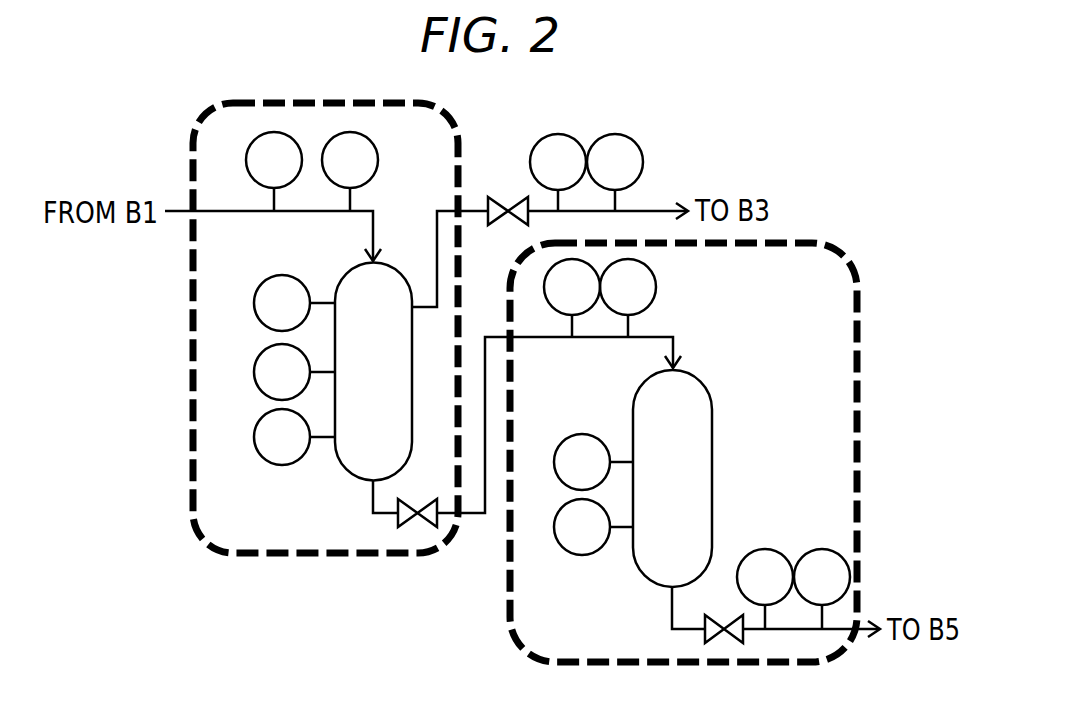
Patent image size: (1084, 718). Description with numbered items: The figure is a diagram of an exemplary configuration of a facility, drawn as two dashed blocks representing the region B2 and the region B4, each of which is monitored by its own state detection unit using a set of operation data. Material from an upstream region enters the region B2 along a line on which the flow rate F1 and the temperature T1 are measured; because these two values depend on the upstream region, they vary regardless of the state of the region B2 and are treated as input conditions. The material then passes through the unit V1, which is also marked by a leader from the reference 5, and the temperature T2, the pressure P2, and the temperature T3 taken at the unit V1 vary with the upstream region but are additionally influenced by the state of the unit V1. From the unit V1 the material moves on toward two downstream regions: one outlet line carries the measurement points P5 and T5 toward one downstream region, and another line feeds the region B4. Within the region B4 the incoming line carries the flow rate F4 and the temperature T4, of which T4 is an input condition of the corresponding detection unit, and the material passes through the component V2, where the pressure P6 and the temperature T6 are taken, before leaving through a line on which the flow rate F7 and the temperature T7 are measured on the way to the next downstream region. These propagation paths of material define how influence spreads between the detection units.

The reactor vessel V1 5 is at (392, 372).
The region B2 is at (325, 353).
The region B4 is at (683, 452).
The unit V1 is at (373, 372).
The vessel V2 is at (672, 478).
The flow rate F1 is at (274, 171).
The temperature T1 is at (350, 171).
The temperature T2 is at (294, 303).
The pressure P2 is at (294, 372).
The temperature T3 is at (294, 437).
The pressure sensor P5 is at (558, 172).
The temperature sensor T5 is at (615, 172).
The flow rate F4 is at (572, 298).
The temperature T4 is at (628, 298).
The pressure P6 is at (593, 462).
The temperature T6 is at (593, 527).
The flow rate F7 is at (765, 589).
The temperature T7 is at (822, 589).